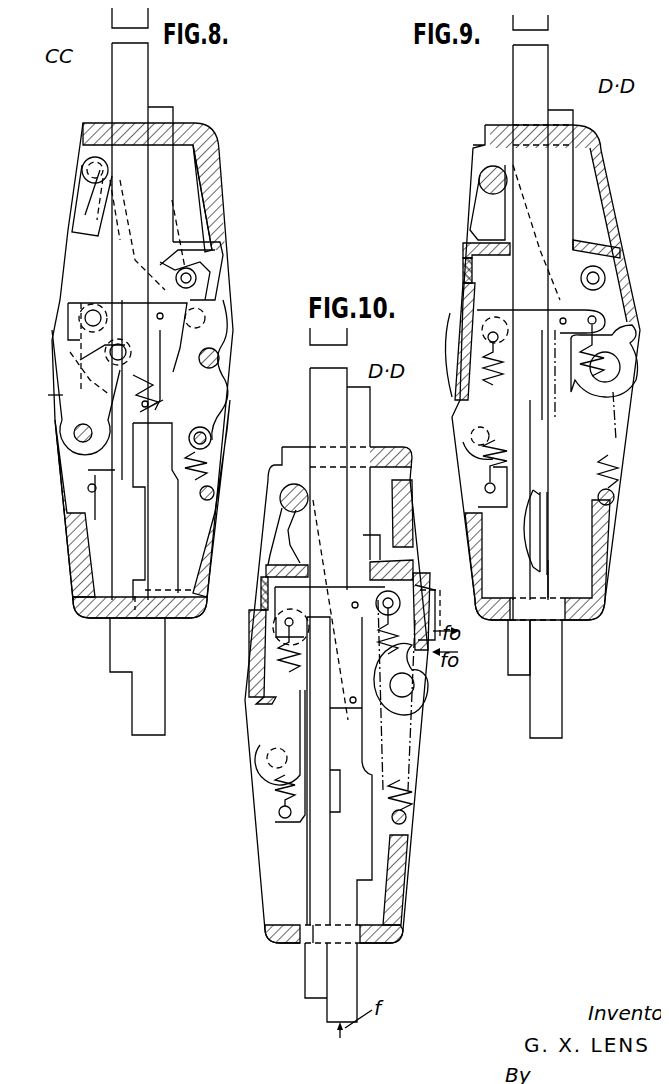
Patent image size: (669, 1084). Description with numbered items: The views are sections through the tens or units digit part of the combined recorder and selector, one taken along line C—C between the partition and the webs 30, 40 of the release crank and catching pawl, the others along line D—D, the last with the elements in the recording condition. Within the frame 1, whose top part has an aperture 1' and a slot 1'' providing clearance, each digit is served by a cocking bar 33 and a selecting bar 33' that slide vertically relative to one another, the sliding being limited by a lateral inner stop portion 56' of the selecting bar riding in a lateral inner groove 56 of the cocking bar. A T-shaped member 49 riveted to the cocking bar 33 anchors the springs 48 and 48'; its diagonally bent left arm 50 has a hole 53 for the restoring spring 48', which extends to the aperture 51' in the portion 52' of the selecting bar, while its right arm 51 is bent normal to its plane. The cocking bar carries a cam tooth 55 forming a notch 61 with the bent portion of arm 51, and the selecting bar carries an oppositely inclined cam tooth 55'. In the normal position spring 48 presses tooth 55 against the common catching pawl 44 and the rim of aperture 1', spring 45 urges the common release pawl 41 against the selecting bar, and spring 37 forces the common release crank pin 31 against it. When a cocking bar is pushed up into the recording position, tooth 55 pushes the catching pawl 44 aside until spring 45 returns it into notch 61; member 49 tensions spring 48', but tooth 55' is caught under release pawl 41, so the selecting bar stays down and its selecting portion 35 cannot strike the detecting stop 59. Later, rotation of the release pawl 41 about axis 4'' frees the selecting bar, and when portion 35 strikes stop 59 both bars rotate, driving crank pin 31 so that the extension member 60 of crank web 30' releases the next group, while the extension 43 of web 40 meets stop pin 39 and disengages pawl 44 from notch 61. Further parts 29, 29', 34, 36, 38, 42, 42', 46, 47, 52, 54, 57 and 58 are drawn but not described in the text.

In FIG. 8, the frame 1 is at (140, 390).
In FIG. 9, the aperture 1' is at (546, 353).
In FIG. 10, the aperture 1' is at (337, 680).
In FIG. 9, the slot 1'' is at (506, 637).
In FIG. 10, the slot 1'' is at (372, 947).
In FIG. 8, the lever 29 is at (90, 349).
In FIG. 10, the lever 29' is at (254, 737).
In FIG. 8, the web of release crank 30 is at (107, 190).
In FIG. 10, the web of release crank 30 is at (266, 536).
In FIG. 9, the crank web 30' is at (465, 202).
In FIG. 8, the common release crank pin 31 is at (102, 172).
In FIG. 9, the common release crank pin 31 is at (493, 180).
In FIG. 10, the common release crank pin 31 is at (306, 498).
In FIG. 8, the cocking bar 33 is at (189, 451).
In FIG. 9, the cocking bar 33 is at (563, 666).
In FIG. 8, the selecting bar 33' is at (149, 508).
In FIG. 9, the selecting bar 33' is at (500, 642).
In FIG. 10, the selecting bar 33' is at (331, 982).
In FIG. 8, the rod end 34 is at (155, 727).
In FIG. 8, the selecting portion 35 is at (138, 70).
In FIG. 9, the selecting portion 35 is at (532, 62).
In FIG. 10, the selecting portion 35 is at (325, 378).
In FIG. 8, the pin 36 is at (96, 488).
In FIG. 8, the spring 37 is at (165, 395).
In FIG. 8, the pin 38 is at (207, 442).
In FIG. 8, the stop pin 39 is at (211, 436).
In FIG. 8, the web of catching pawl 40 is at (207, 282).
In FIG. 9, the web of catching pawl 40 is at (600, 305).
In FIG. 8, the common release pawl 41 is at (105, 292).
In FIG. 9, the common release pawl 41 is at (460, 308).
In FIG. 10, the common release pawl 41 is at (265, 677).
In FIG. 8, the pin 42 is at (233, 354).
In FIG. 9, the lever 42' is at (589, 382).
In FIG. 10, the lever 42' is at (401, 695).
In FIG. 8, the extension 43 is at (220, 380).
In FIG. 8, the common catching pawl 44 is at (217, 258).
In FIG. 10, the common catching pawl 44 is at (410, 567).
In FIG. 8, the spring 45 is at (232, 195).
In FIG. 8, the roller 46 is at (105, 305).
In FIG. 8, the roller 47 is at (198, 278).
In FIG. 8, the spring 48 is at (224, 466).
In FIG. 9, the spring 48 is at (604, 468).
In FIG. 10, the spring 48 is at (421, 813).
In FIG. 8, the restoring spring 48' is at (137, 347).
In FIG. 9, the restoring spring 48' is at (462, 461).
In FIG. 9, the T-shaped member 49 is at (480, 382).
In FIG. 10, the T-shaped member 49 is at (337, 645).
In FIG. 9, the left arm 50 is at (488, 337).
In FIG. 10, the left arm 50 is at (288, 597).
In FIG. 9, the right arm 51 is at (572, 359).
In FIG. 10, the right arm 51 is at (388, 631).
In FIG. 8, the aperture 51' is at (77, 454).
In FIG. 9, the aperture 51' is at (456, 490).
In FIG. 10, the aperture 51' is at (252, 796).
In FIG. 9, the arm 52 is at (568, 371).
In FIG. 8, the portion of selecting bar 52' is at (116, 511).
In FIG. 9, the portion of selecting bar 52' is at (465, 493).
In FIG. 10, the portion of selecting bar 52' is at (257, 764).
In FIG. 9, the hole 53 is at (488, 350).
In FIG. 10, the hole 53 is at (287, 627).
In FIG. 8, the pin 54 is at (214, 494).
In FIG. 8, the cam tooth 55 is at (206, 250).
In FIG. 9, the cam tooth 55 is at (595, 246).
In FIG. 10, the cam tooth 55 is at (405, 537).
In FIG. 9, the cam tooth 55' is at (465, 268).
In FIG. 9, the lateral inner groove 56 is at (569, 531).
In FIG. 10, the lateral inner groove 56 is at (403, 690).
In FIG. 9, the lateral inner stop portion 56' is at (546, 500).
In FIG. 10, the lateral inner stop portion 56' is at (291, 771).
In FIG. 9, the rod 57 is at (533, 580).
In FIG. 8, the rod end 58 is at (162, 590).
In FIG. 10, the rod end 58 is at (362, 875).
In FIG. 8, the detecting stop 59 is at (130, 17).
In FIG. 9, the detecting stop 59 is at (542, 22).
In FIG. 10, the detecting stop 59 is at (338, 337).
In FIG. 9, the extension member 60 is at (463, 262).
In FIG. 10, the extension member 60 is at (262, 575).
In FIG. 8, the notch 61 is at (197, 285).
In FIG. 9, the notch 61 is at (536, 232).
In FIG. 10, the notch 61 is at (408, 593).
In FIG. 9, the axis 4'' is at (456, 435).